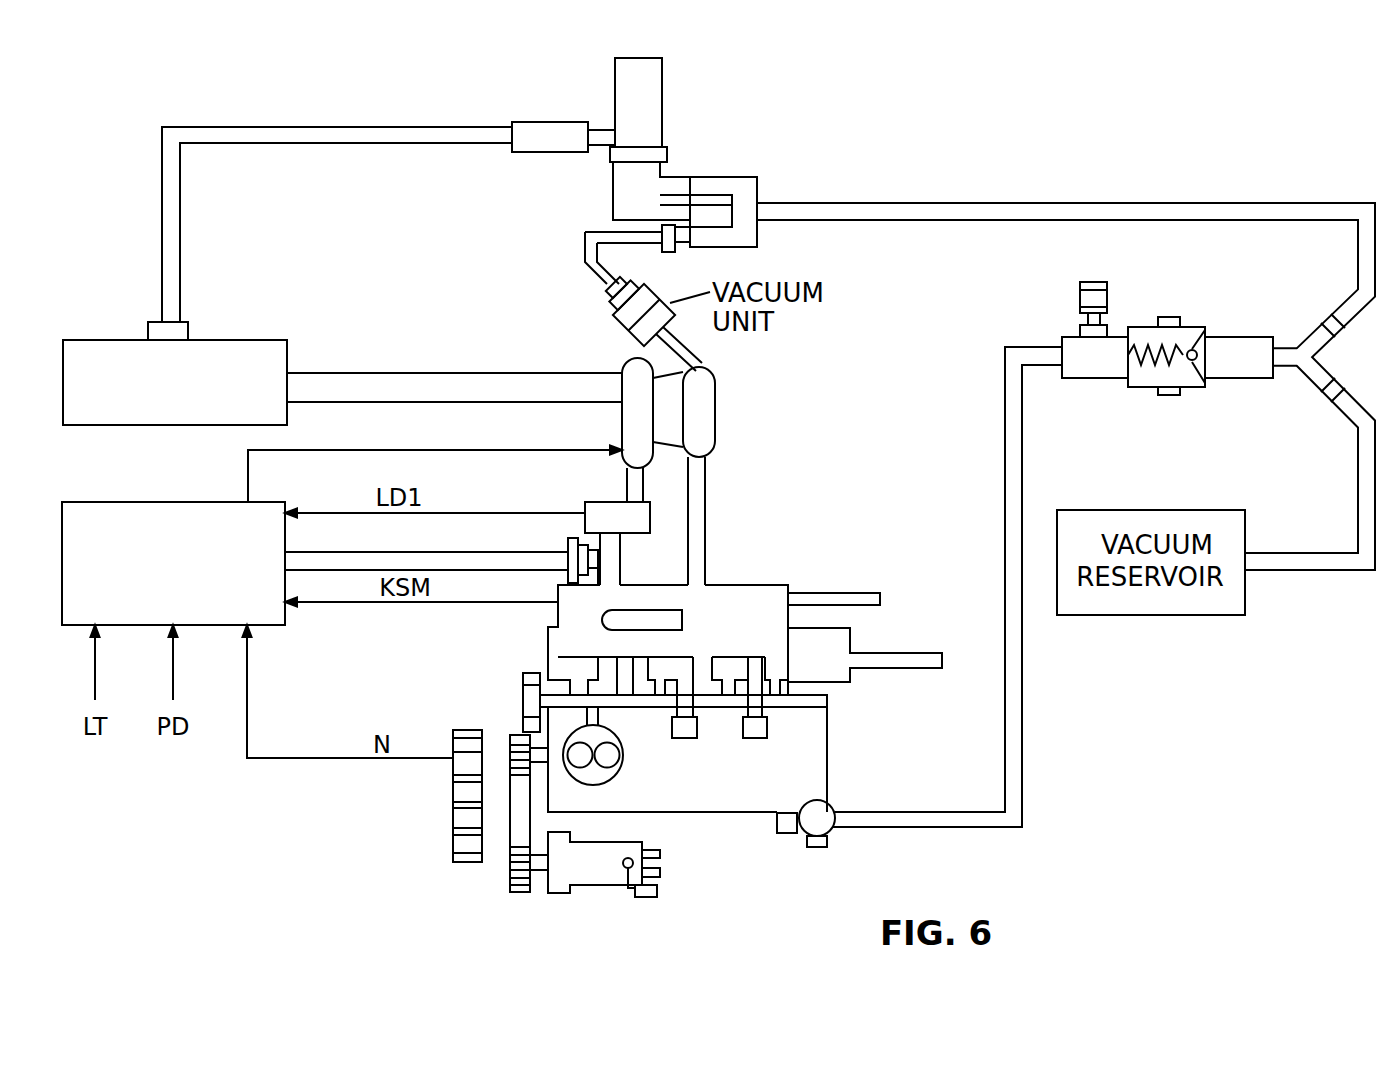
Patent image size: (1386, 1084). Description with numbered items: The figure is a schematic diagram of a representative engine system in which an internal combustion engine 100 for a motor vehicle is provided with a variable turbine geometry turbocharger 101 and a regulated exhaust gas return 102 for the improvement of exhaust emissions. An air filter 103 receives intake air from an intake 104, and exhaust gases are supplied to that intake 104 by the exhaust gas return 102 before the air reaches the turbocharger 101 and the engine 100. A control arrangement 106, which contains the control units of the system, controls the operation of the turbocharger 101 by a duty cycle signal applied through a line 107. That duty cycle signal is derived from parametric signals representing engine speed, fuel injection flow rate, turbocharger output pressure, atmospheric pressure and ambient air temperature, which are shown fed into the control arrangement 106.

The internal combustion engine 100 is at (722, 817).
The variable turbine geometry turbocharger 101 is at (722, 412).
The exhaust gas return 102 is at (738, 172).
The air filter 103 is at (230, 340).
The intake 104 is at (662, 85).
The control arrangement 106 is at (120, 502).
The line 107 is at (250, 482).